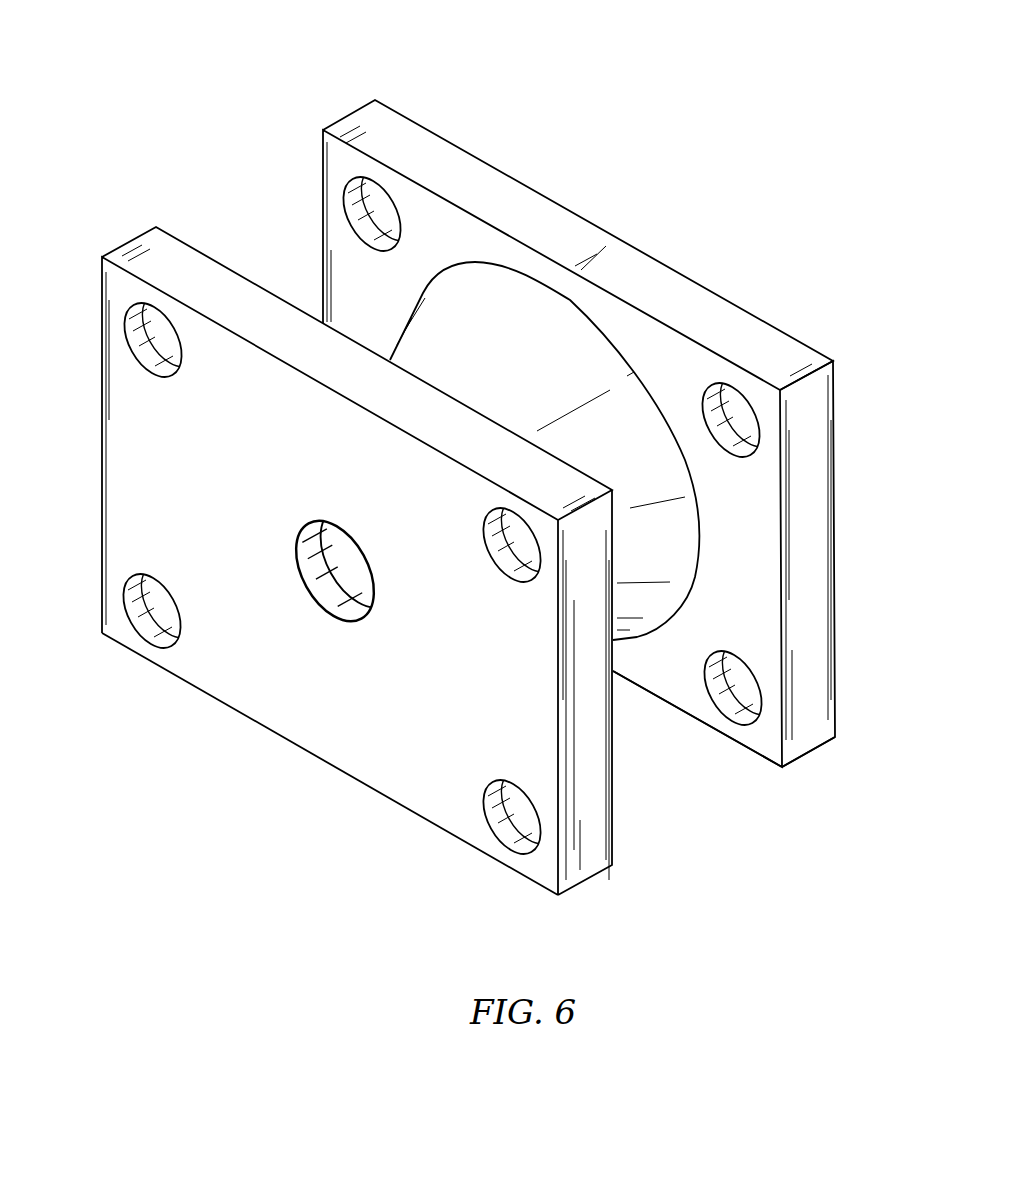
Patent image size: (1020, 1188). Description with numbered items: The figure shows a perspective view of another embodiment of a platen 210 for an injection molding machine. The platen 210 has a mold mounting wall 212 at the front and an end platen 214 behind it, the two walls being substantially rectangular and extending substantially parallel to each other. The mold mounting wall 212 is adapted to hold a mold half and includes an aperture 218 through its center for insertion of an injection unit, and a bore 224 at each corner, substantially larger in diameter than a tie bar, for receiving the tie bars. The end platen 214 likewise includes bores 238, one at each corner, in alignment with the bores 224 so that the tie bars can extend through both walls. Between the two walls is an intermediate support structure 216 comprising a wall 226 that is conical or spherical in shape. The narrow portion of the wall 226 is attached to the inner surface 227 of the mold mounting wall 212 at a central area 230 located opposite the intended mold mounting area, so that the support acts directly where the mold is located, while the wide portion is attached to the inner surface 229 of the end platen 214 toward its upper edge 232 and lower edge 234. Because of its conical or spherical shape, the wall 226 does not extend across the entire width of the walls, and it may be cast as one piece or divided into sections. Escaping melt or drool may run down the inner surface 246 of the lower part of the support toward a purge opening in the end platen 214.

The platen 210 is at (782, 210).
The mold mounting wall 212 is at (168, 243).
The end platen 214 is at (388, 116).
The intermediate support structure 216 is at (523, 283).
The aperture 218 is at (320, 555).
The bore 224 is at (136, 338).
The wall 226 is at (585, 335).
The inner surface 227 is at (208, 253).
The inner surface 229 is at (732, 560).
The central area 230 is at (263, 708).
The upper edge 232 is at (778, 345).
The lower edge 234 is at (812, 738).
The bore 238 is at (722, 703).
The inner surface 246 is at (753, 738).